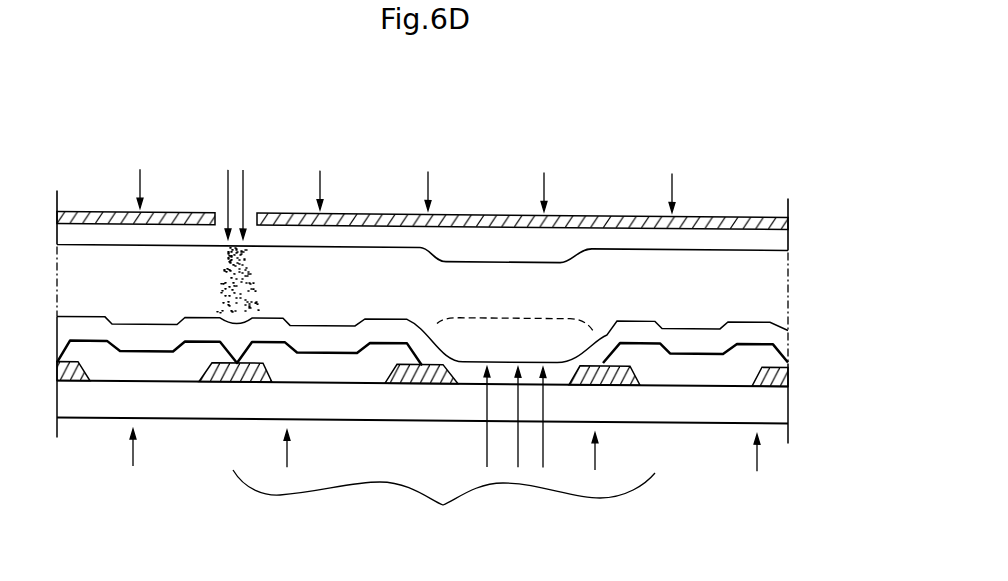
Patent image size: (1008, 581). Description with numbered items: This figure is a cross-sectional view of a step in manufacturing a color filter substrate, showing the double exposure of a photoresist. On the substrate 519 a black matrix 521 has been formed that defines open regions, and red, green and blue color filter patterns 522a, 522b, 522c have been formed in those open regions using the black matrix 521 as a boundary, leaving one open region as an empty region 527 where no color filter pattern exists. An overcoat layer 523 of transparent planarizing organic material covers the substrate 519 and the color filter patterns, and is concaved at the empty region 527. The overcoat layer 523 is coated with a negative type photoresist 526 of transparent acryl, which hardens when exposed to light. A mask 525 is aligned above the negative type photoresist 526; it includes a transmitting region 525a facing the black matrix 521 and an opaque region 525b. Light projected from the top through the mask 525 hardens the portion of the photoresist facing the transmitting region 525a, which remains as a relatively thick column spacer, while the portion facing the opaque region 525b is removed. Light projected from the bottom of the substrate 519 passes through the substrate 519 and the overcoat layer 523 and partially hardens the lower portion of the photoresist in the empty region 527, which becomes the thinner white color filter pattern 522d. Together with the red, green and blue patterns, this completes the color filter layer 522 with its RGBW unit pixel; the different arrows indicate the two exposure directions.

The substrate 519 is at (782, 409).
The black matrix 521 is at (73, 382).
The color filter layer 522 is at (444, 502).
The red color filter pattern 522a is at (192, 371).
The green color filter pattern 522b is at (358, 374).
The blue color filter pattern 522c is at (660, 374).
The white color filter pattern 522d is at (477, 348).
The overcoat layer 523 is at (781, 343).
The mask 525 is at (734, 213).
The transmitting region 525a is at (253, 200).
The opaque region 525b is at (603, 231).
The negative type photoresist 526 is at (781, 289).
The empty region 527 is at (514, 306).